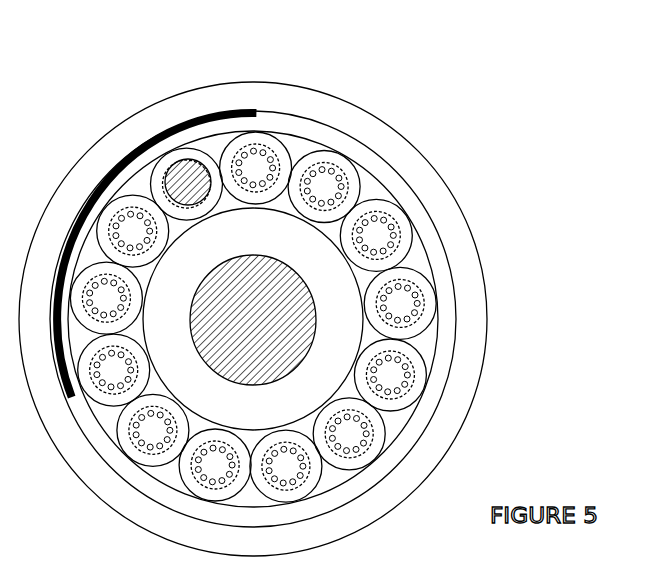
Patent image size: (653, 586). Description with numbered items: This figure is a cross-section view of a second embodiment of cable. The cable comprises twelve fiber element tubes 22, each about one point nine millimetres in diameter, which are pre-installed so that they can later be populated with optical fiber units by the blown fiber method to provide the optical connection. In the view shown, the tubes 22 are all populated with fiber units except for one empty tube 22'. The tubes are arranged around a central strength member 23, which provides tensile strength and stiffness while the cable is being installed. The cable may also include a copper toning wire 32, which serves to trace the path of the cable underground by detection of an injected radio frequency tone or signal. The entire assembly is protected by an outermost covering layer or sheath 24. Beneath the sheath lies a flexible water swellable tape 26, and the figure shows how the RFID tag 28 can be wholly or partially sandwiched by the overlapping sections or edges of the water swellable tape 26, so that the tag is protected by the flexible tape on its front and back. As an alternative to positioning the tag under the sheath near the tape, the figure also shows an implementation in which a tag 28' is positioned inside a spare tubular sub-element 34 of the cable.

The fiber element tubes 22 is at (317, 317).
The empty tube 22' is at (194, 104).
The strength member 23 is at (335, 331).
The outermost covering layer or sheath 24 is at (423, 188).
The water swellable tape 26 is at (362, 143).
The tag 28 is at (190, 206).
The tag 28' is at (124, 153).
The copper toning wire 32 is at (258, 306).
The spare tubular sub-element 34 is at (157, 167).